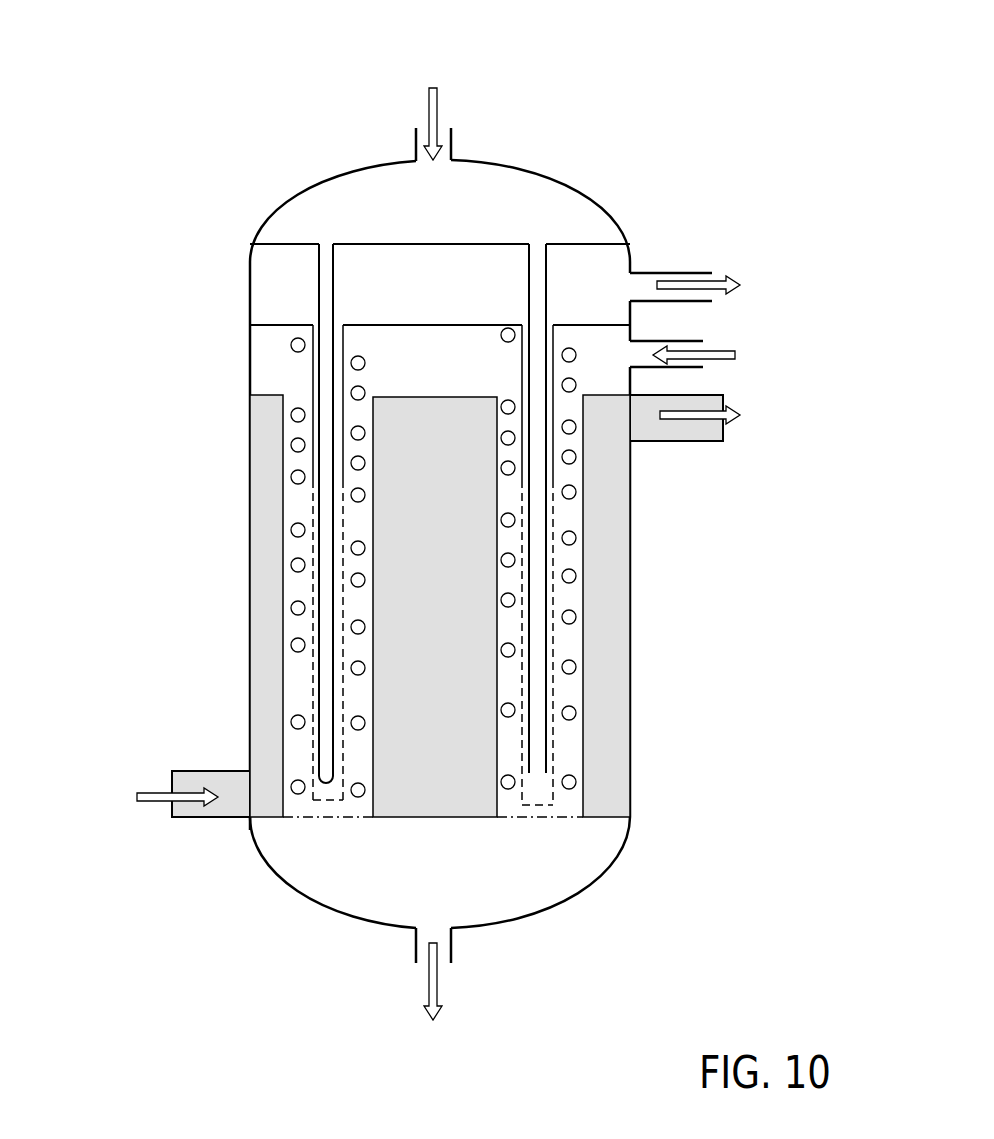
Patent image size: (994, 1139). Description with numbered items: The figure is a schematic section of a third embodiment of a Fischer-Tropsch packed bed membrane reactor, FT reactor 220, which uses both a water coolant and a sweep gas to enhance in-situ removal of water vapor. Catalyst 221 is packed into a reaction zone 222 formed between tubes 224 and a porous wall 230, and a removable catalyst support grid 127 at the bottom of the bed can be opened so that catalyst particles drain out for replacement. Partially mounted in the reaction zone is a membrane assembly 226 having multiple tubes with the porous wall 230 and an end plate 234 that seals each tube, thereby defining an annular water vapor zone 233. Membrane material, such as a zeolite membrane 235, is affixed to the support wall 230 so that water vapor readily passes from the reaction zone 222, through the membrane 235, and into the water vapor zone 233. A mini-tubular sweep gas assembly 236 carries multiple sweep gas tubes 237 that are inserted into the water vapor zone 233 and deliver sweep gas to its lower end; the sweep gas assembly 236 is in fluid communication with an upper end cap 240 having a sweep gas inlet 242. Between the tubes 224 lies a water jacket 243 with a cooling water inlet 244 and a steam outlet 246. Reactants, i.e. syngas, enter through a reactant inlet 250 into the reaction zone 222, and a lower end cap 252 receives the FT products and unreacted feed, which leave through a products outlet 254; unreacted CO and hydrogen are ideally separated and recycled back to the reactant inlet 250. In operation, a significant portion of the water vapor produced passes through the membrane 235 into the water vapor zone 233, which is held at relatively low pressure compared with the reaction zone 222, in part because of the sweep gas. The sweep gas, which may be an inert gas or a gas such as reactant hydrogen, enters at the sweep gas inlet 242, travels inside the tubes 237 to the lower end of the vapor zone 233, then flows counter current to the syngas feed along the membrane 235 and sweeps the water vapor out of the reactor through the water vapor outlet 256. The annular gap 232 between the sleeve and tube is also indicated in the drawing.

The removable catalyst support grid 127 is at (339, 818).
The FT reactor 220 is at (683, 122).
The catalyst 221 is at (572, 579).
The reaction zone 222 is at (570, 518).
The tube 224 is at (318, 378).
The membrane assembly 226 is at (473, 325).
The porous wall 230 is at (322, 496).
The annular gap 232 is at (340, 350).
The water vapor zone 233 is at (320, 652).
The end plate 234 is at (330, 800).
The zeolite membrane 235 is at (350, 742).
The sweep gas assembly 236 is at (455, 243).
The sweep gas tubes 237 is at (316, 300).
The end cap 240 is at (318, 183).
The sweep gas inlet 242 is at (414, 135).
The water jacket 243 is at (250, 605).
The cooling water inlet 244 is at (200, 818).
The steam outlet 246 is at (690, 443).
The reactant inlet 250 is at (688, 342).
The end cap 252 is at (548, 915).
The products outlet 254 is at (452, 960).
The water vapor outlet 256 is at (683, 272).